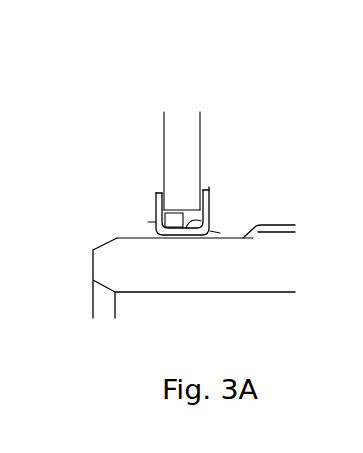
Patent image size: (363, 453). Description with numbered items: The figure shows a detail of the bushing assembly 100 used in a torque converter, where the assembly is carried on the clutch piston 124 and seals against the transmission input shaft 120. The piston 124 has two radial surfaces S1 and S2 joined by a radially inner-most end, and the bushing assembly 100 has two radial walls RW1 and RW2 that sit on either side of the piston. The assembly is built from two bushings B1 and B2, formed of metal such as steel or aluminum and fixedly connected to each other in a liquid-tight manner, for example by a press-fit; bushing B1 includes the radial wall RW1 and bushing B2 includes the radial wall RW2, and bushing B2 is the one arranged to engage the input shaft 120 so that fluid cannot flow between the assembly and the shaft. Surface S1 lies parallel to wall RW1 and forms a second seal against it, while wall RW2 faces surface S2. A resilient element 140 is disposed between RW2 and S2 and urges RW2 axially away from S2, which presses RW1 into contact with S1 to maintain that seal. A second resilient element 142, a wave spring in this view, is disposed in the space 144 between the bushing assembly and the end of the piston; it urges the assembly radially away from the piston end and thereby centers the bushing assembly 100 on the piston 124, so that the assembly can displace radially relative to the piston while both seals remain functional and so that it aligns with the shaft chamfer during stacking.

The bushing assembly 100 is at (200, 84).
The piston 124 is at (165, 133).
The transmission input shaft 120 is at (275, 263).
The resilient element 140 is at (164, 229).
The resilient element 142 is at (175, 218).
The space 144 is at (187, 217).
The radial surface S1 is at (163, 143).
The radial surface S2 is at (200, 118).
The radial wall RW1 is at (158, 212).
The radial wall RW2 is at (210, 212).
The bushing B1 is at (157, 222).
The bushing B2 is at (210, 231).